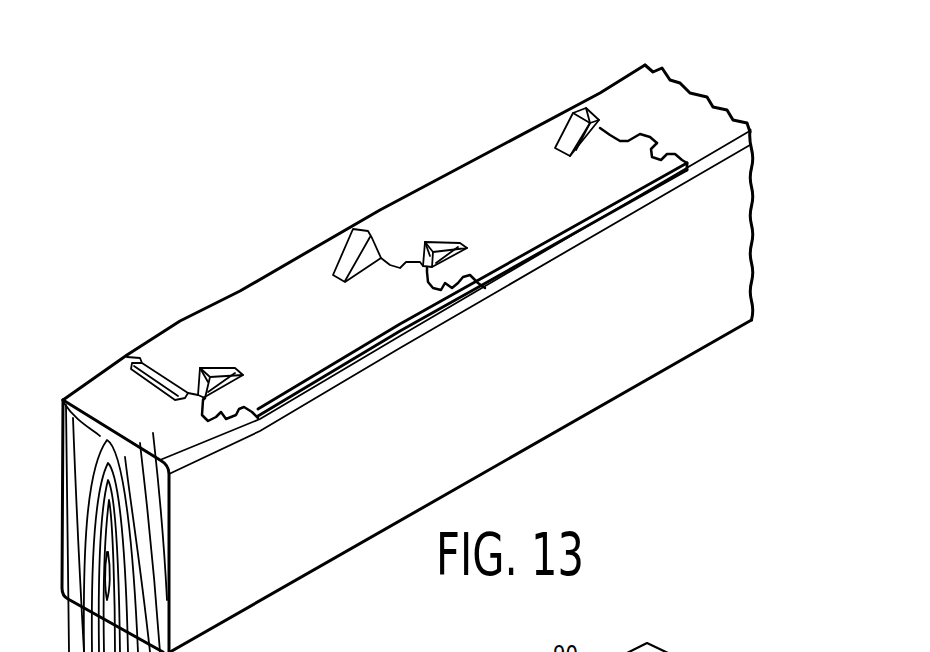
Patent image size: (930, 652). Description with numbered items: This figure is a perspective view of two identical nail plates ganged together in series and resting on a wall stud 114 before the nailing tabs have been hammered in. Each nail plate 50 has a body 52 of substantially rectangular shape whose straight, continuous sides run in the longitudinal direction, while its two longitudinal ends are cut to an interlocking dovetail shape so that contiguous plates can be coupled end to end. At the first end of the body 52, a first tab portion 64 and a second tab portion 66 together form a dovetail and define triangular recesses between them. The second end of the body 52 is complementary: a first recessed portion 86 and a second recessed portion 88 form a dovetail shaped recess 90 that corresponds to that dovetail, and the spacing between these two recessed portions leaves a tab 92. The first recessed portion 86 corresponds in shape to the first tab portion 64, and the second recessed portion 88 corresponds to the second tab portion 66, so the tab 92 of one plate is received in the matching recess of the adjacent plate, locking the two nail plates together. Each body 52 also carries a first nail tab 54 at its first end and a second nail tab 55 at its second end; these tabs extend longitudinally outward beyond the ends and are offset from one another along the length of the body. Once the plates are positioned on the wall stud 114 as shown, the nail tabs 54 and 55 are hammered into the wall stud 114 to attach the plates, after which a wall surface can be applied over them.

The nail plate 50 is at (473, 155).
The body 52 is at (543, 216).
The nail tab 54 is at (431, 236).
The second nail tab 55 is at (563, 122).
The first tab portion 64 is at (378, 240).
The second tab portion 66 is at (433, 270).
The first recessed portion 86 is at (600, 114).
The second recessed portion 88 is at (708, 148).
The dovetail shaped recess 90 is at (625, 130).
The tab 92 is at (671, 146).
The wall stud 114 is at (301, 531).